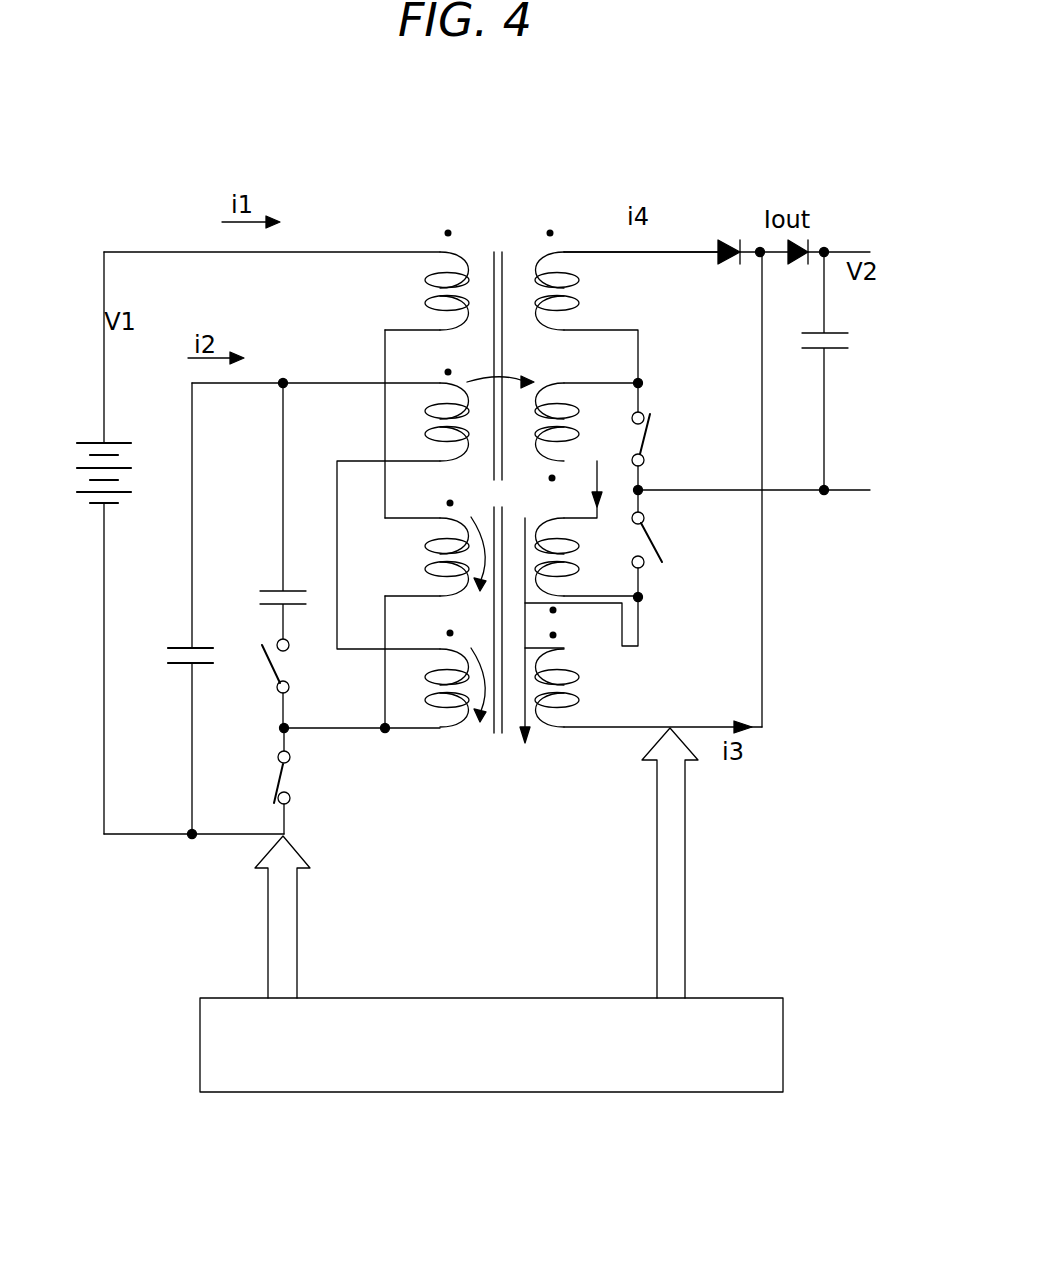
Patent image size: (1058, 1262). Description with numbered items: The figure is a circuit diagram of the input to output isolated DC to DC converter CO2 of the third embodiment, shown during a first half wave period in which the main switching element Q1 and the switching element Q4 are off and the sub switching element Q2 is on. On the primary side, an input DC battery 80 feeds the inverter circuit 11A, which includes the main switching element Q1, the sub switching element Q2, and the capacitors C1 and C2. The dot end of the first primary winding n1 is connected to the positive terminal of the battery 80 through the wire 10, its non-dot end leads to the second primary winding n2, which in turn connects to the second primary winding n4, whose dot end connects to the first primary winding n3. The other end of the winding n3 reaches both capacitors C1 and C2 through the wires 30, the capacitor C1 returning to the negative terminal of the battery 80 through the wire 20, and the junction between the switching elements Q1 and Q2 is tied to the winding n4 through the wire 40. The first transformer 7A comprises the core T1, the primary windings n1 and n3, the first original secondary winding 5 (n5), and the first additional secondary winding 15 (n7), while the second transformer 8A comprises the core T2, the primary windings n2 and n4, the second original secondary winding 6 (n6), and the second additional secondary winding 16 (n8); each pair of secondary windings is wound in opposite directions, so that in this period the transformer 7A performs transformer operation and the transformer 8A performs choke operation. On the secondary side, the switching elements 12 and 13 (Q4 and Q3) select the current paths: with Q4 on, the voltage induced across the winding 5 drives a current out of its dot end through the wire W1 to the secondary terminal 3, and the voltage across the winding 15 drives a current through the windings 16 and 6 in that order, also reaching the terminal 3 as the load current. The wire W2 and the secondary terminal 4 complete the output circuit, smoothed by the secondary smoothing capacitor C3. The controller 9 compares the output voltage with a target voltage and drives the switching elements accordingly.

The wire 10 is at (372, 250).
The wires 30 is at (328, 398).
The wire 40 is at (331, 735).
The wire 20 is at (152, 833).
The input DC battery 80 is at (76, 508).
The capacitor C1 is at (172, 657).
The capacitor C2 is at (264, 511).
The secondary smoothing capacitor C3 is at (843, 373).
The main switching element Q1 is at (261, 781).
The sub switching element Q2 is at (261, 686).
The switching element Q3 is at (665, 546).
The switching element Q4 is at (660, 437).
The inverter circuit 11A is at (372, 797).
The core T1 is at (496, 348).
The core T2 is at (499, 637).
The first transformer 7A is at (523, 244).
The second transformer 8A is at (462, 746).
The first primary winding n1 is at (429, 291).
The second primary winding n2 is at (429, 557).
The first primary winding n3 is at (429, 422).
The second primary winding n4 is at (429, 688).
The first original secondary winding n5 is at (574, 291).
The second original secondary winding n6 is at (569, 687).
The first additional secondary winding n7 is at (574, 422).
The second additional secondary winding n8 is at (574, 557).
The first original secondary winding 5 is at (588, 270).
The second original secondary winding 6 is at (578, 728).
The first additional secondary winding 15 is at (586, 406).
The second additional secondary winding 16 is at (598, 552).
The switching element 12 is at (660, 420).
The switching element 13 is at (661, 568).
The secondary terminal 3 is at (728, 238).
The secondary terminal 4 is at (790, 492).
The wire W1 is at (682, 246).
The wire W2 is at (738, 492).
The controller 9 is at (783, 1020).
The input to output isolated DC to DC converter CO2 is at (851, 1062).